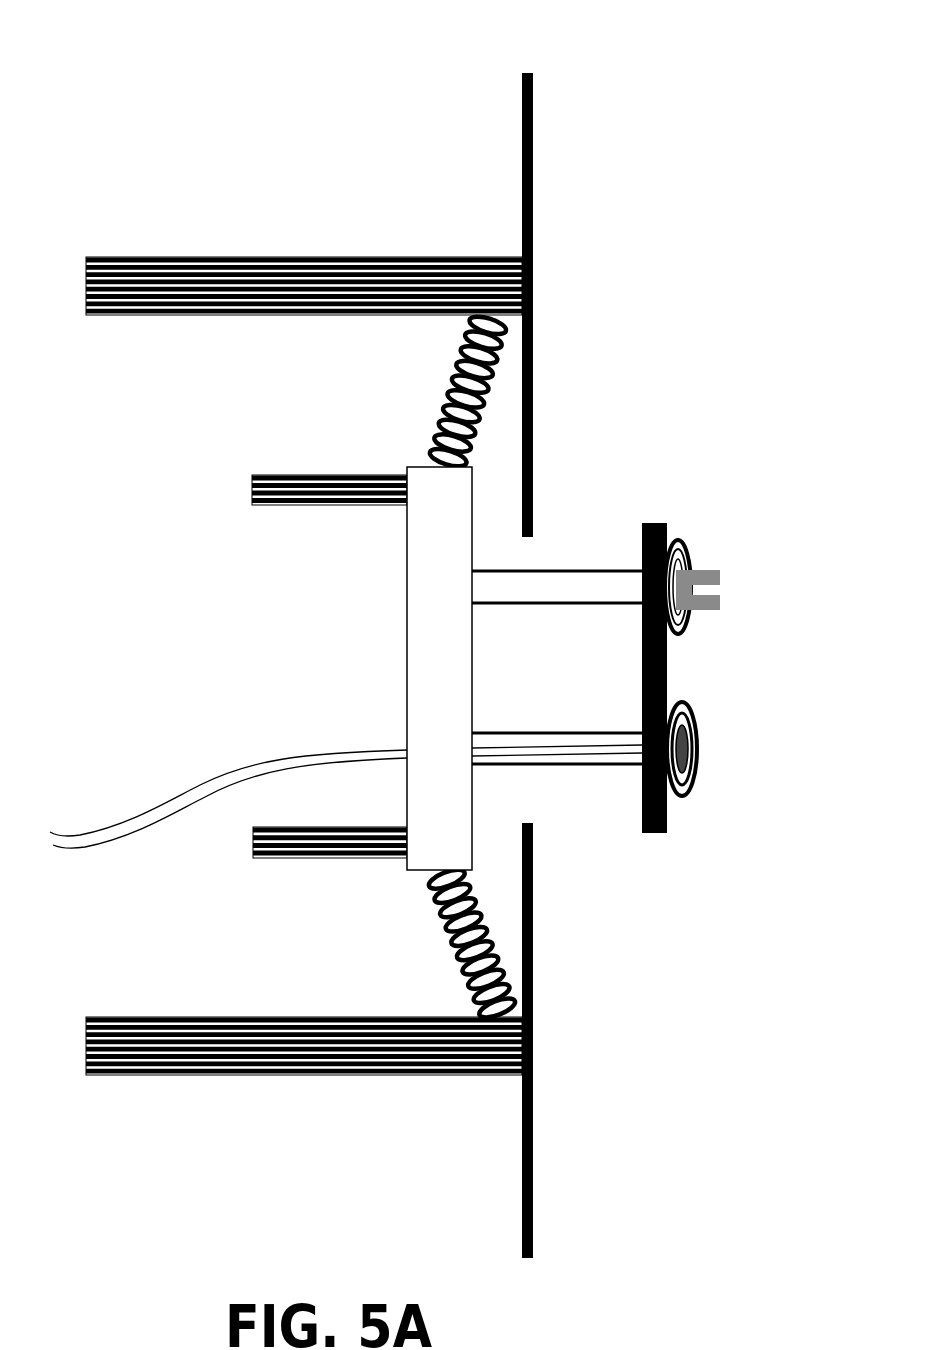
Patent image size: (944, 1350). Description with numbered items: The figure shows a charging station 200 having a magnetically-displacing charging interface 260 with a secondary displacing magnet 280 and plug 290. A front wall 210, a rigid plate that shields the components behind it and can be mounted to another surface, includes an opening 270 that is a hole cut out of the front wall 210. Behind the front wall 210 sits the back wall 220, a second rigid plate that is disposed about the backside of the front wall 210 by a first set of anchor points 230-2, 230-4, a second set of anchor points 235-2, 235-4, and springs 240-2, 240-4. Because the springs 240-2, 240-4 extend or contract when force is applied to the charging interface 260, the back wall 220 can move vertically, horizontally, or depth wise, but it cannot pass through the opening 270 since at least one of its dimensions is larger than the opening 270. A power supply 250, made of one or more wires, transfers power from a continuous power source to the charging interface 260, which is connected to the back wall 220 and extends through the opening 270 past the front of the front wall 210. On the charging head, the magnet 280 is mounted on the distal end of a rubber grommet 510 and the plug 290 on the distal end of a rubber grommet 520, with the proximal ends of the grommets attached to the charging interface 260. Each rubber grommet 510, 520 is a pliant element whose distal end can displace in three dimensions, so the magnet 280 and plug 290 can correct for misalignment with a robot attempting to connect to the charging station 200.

The charging station 200 is at (346, 72).
The front wall 210 is at (533, 95).
The back wall 220 is at (456, 666).
The anchor point 230-2 is at (496, 257).
The anchor point 230-4 is at (495, 1075).
The anchor point 235-2 is at (252, 475).
The anchor point 235-4 is at (255, 858).
The spring 240-2 is at (453, 375).
The spring 240-4 is at (447, 935).
The power supply 250 is at (88, 843).
The magnetically-displacing charging interface 260 is at (675, 497).
The opening 270 is at (557, 682).
The magnet 280 is at (718, 612).
The charging plug 290 is at (693, 768).
The rubber grommet 510 is at (678, 633).
The rubber grommet 520 is at (683, 797).